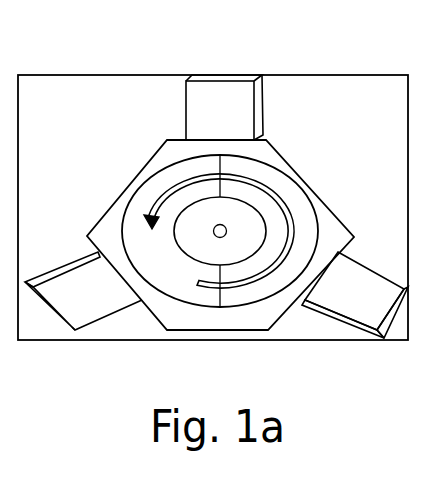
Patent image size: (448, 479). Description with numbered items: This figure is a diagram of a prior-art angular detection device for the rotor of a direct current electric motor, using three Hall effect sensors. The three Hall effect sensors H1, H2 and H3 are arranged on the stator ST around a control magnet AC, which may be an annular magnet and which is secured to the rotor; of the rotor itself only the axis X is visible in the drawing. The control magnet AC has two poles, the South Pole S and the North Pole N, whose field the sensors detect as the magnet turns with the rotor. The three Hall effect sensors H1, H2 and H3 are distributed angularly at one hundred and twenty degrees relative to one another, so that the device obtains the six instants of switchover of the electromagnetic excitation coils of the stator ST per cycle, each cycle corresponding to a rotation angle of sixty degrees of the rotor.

The Hall effect sensor H1 is at (210, 93).
The Hall effect sensor H2 is at (367, 307).
The Hall effect sensor H3 is at (88, 306).
The stator ST is at (323, 97).
The North Pole N is at (140, 237).
The control magnet AC is at (149, 190).
The South Pole S is at (302, 227).
The axis X is at (226, 236).